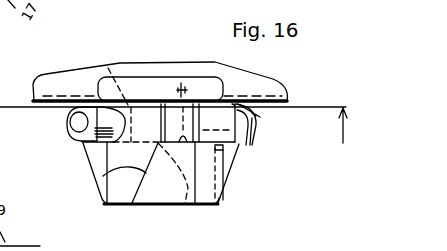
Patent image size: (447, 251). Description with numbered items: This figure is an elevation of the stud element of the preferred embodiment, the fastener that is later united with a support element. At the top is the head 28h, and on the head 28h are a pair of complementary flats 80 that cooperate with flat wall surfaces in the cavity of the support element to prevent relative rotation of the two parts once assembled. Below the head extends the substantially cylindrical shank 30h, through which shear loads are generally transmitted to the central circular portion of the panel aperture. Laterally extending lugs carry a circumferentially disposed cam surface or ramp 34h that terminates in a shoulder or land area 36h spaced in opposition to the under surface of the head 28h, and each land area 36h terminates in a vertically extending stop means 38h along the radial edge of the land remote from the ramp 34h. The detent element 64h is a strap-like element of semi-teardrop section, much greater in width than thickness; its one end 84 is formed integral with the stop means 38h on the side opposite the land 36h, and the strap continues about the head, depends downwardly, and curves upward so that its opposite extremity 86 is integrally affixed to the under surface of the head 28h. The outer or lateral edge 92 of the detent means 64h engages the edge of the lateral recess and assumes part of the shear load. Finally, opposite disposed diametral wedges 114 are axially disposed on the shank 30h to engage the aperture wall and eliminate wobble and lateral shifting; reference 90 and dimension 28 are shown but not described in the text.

The head 28h is at (247, 82).
The complementary flats 80 is at (135, 88).
The diametral wedges 114 is at (190, 100).
The opposite extremity 86 is at (96, 110).
The land area 36h is at (194, 223).
The lateral edge 92 is at (72, 133).
The detent element 64h is at (78, 145).
The shank 30h is at (125, 197).
The ramp 34h is at (103, 176).
The side wall 90 is at (230, 178).
The stop means 38h is at (247, 133).
The end of the detent means 84 is at (252, 113).
The height dimension 28 is at (342, 134).